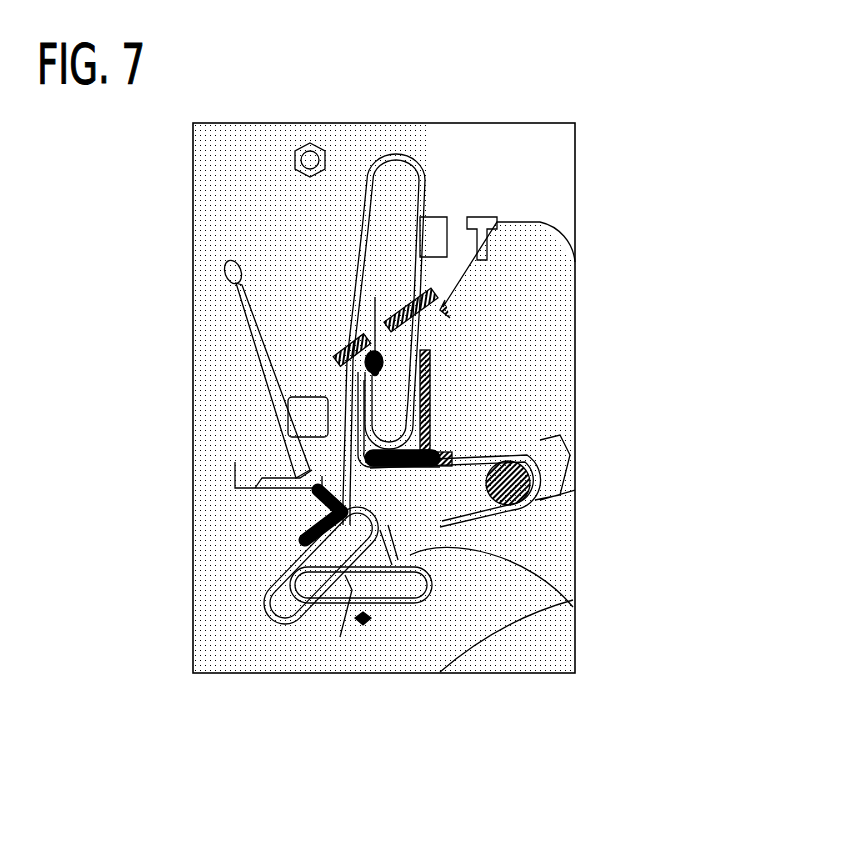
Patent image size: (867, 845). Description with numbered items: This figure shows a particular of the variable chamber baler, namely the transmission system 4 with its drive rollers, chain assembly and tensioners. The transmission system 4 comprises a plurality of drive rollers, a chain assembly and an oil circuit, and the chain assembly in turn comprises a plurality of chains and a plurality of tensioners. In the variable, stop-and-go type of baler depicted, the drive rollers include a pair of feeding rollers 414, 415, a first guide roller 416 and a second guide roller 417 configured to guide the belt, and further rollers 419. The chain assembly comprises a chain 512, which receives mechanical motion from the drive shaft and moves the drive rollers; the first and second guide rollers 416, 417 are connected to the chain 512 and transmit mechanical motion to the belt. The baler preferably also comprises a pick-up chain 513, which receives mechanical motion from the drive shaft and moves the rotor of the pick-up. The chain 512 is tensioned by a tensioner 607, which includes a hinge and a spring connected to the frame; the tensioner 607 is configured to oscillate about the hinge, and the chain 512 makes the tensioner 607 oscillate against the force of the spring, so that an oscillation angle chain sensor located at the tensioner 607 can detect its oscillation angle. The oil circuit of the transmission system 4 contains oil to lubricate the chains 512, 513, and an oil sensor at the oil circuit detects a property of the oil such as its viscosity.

The transmission system 4 is at (443, 310).
The second guide roller 417 is at (423, 178).
The chain 512 is at (422, 207).
The further rollers 419 is at (397, 383).
The first guide roller 416 is at (393, 423).
The tensioner 607 is at (430, 452).
The feeding roller 414 is at (283, 603).
The feeding roller 415 is at (375, 530).
The pick-up chain 513 is at (343, 577).